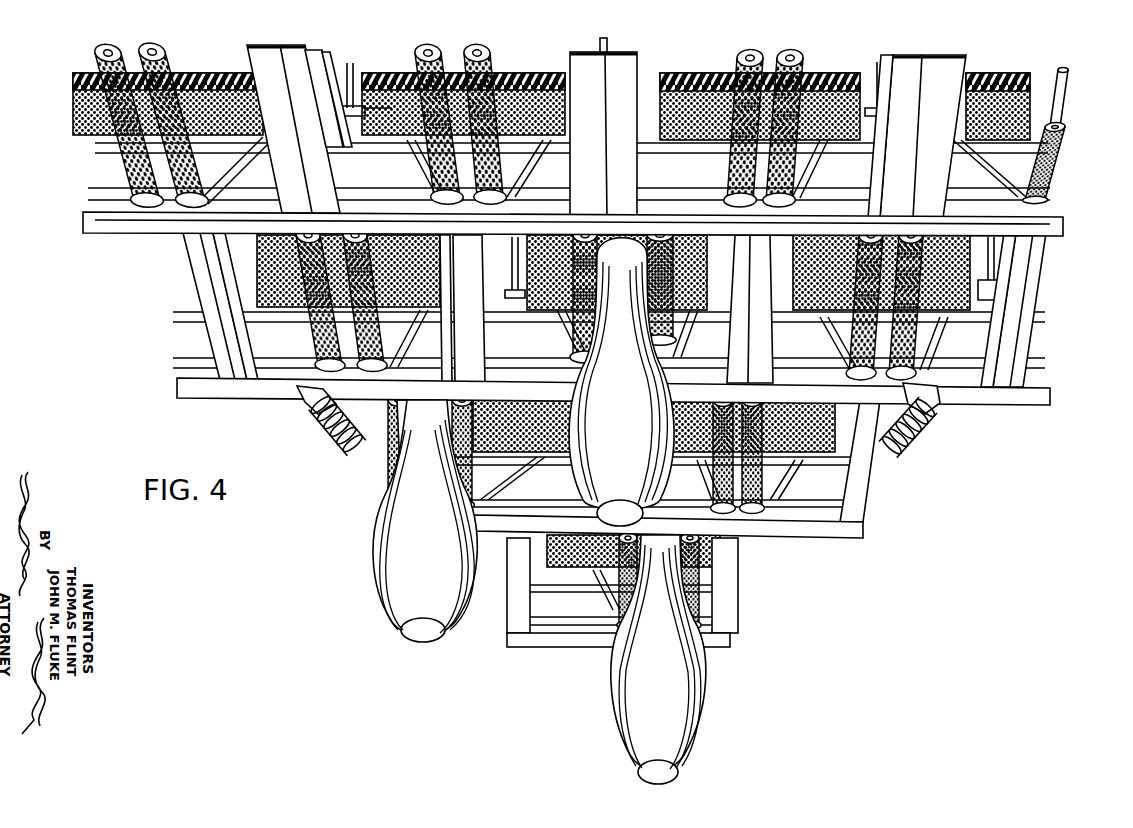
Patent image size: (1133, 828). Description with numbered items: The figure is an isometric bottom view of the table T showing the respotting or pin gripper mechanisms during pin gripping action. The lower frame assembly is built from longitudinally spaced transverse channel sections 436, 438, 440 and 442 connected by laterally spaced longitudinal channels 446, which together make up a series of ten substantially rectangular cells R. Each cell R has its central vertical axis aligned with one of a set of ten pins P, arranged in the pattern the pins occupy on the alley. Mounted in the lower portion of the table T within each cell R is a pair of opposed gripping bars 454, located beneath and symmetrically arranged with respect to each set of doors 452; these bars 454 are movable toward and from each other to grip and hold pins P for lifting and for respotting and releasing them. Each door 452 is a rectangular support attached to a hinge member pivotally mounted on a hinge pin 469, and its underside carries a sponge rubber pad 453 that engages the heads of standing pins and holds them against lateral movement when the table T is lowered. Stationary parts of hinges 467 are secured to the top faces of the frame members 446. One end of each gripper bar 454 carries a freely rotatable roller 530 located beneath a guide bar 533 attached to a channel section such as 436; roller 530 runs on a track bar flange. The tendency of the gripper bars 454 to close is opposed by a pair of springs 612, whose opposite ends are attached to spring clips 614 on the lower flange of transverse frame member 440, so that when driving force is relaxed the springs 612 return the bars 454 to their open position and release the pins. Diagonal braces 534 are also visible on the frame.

The transverse channel section 436 is at (540, 645).
The transverse channel section 438 is at (845, 530).
The transverse frame member 440 is at (180, 388).
The transverse channel section 442 is at (87, 223).
The longitudinal channel 446 is at (262, 58).
The door 452 is at (238, 75).
The sponge rubber pad 453 is at (218, 98).
The gripping bar 454 is at (158, 48).
The hinge 467 is at (520, 255).
The hinge pin 469 is at (355, 63).
The roller 530 is at (193, 216).
The guide bar 533 is at (92, 190).
The diagonal brace 534 is at (215, 160).
The spring 612 is at (330, 432).
The spring clip 614 is at (305, 402).
The pin P is at (628, 350).
The cell R is at (1086, 98).
The table T is at (957, 466).